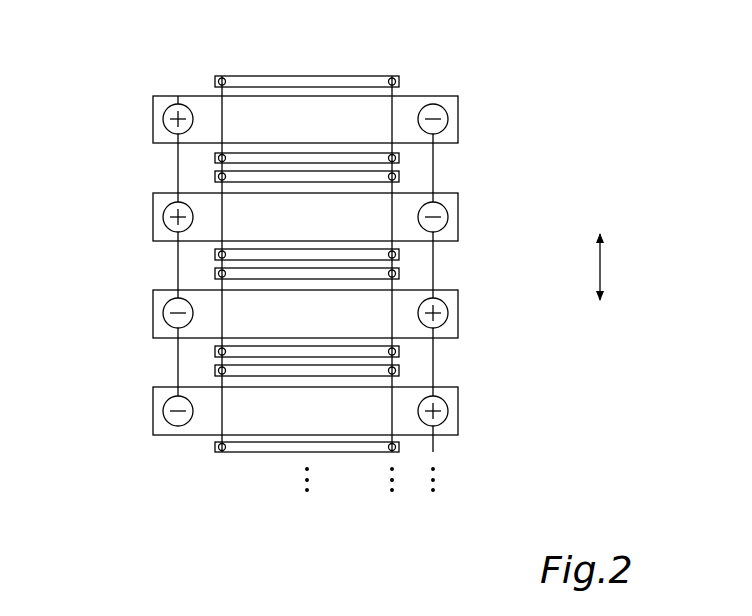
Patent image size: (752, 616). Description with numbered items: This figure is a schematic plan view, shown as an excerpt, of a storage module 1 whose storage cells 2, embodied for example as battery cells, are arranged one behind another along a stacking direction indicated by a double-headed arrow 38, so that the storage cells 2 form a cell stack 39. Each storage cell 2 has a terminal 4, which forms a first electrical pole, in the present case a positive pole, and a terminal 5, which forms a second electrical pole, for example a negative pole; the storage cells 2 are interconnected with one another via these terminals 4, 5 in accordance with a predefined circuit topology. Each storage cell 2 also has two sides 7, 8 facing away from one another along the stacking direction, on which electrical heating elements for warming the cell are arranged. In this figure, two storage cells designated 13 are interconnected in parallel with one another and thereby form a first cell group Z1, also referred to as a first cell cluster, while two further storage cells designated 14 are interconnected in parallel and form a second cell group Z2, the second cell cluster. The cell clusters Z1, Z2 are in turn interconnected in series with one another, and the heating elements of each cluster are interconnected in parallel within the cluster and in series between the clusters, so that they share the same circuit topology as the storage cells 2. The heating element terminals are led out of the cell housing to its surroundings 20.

The storage module 1 is at (131, 83).
The storage cell 2 is at (462, 105).
The terminal 4 is at (180, 96).
The terminal 5 is at (437, 298).
The side 7 is at (418, 93).
The side 8 is at (414, 147).
The storage cells 13 is at (497, 143).
The storage cells 14 is at (490, 358).
The surroundings 20 is at (612, 185).
The first cell group Z1 is at (538, 188).
The second cell group Z2 is at (530, 372).
The double-headed arrow 38 is at (602, 265).
The cell stack 39 is at (171, 448).